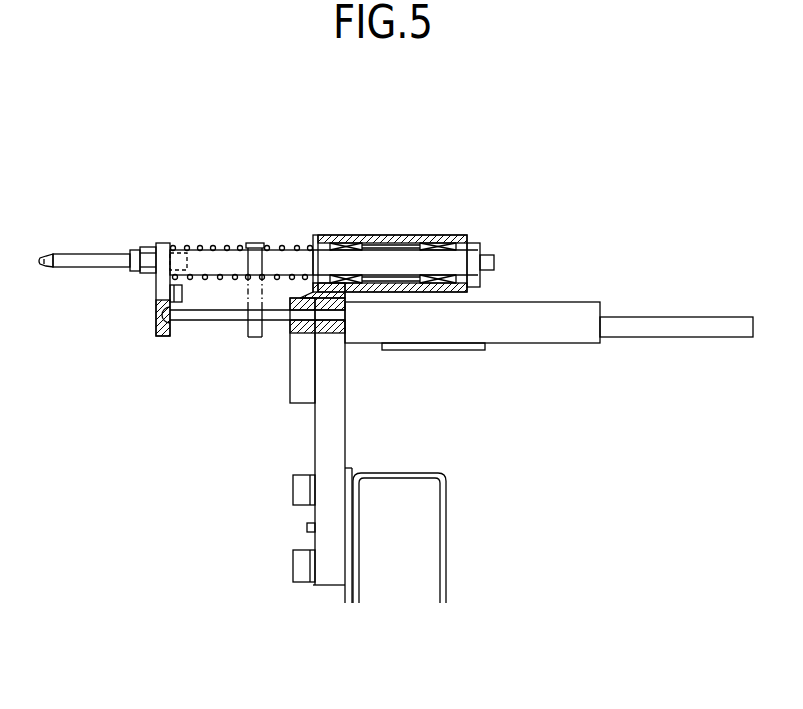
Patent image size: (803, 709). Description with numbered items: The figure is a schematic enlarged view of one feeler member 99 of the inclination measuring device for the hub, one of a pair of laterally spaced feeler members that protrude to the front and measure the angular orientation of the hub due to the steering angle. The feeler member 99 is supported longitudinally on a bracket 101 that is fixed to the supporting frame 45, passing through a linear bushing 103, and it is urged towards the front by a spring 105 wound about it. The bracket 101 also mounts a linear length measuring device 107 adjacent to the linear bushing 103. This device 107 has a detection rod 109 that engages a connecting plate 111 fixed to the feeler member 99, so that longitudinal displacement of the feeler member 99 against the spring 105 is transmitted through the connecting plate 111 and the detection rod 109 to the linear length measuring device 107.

The supporting frame 45 is at (443, 533).
The feeler member 99 is at (87, 257).
The bracket 101 is at (327, 435).
The linear bushing 103 is at (443, 233).
The spring 105 is at (225, 243).
The linear length measuring device 107 is at (533, 308).
The detection rod 109 is at (225, 322).
The connecting plate 111 is at (158, 298).